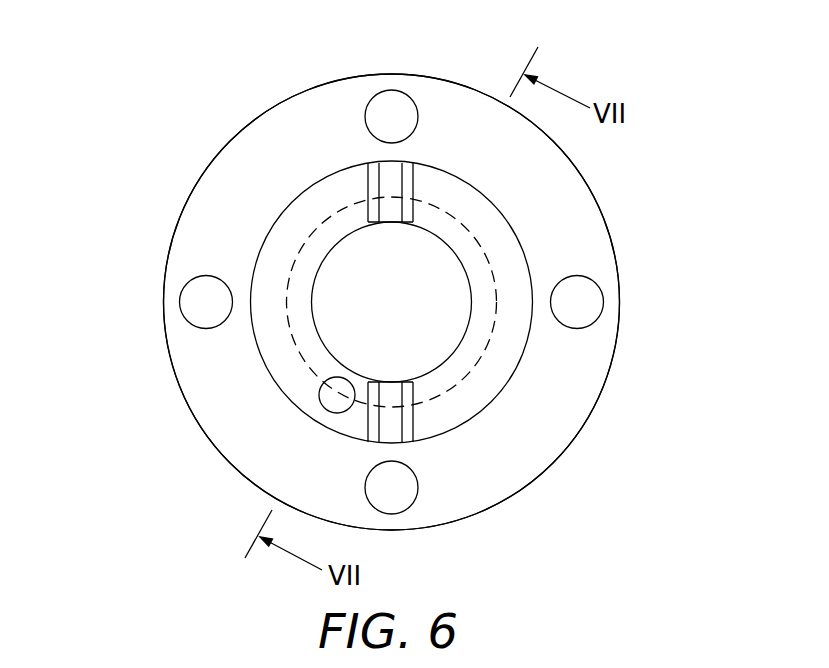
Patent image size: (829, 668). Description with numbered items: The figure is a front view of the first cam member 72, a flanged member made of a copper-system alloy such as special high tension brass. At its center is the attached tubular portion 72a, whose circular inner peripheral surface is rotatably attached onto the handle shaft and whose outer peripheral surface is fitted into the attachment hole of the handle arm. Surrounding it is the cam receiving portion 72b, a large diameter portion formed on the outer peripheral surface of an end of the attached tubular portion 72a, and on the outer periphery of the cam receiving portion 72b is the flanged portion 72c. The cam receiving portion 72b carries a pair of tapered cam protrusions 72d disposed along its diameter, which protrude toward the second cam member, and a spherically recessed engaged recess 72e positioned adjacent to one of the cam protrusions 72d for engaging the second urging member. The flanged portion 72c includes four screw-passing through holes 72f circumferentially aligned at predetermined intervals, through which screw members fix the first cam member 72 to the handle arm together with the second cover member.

The first cam member 72 is at (633, 205).
The attached tubular portion 72a is at (293, 264).
The cam receiving portion 72b is at (328, 160).
The flanged portion 72c is at (232, 132).
The cam protrusions 72d is at (380, 178).
The engaged recess 72e is at (335, 380).
The screw-passing through holes 72f is at (384, 104).